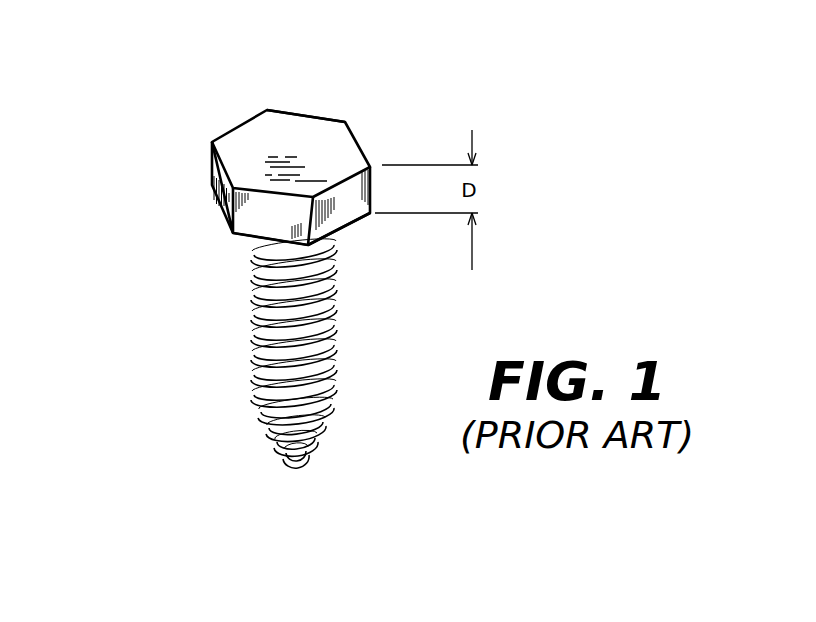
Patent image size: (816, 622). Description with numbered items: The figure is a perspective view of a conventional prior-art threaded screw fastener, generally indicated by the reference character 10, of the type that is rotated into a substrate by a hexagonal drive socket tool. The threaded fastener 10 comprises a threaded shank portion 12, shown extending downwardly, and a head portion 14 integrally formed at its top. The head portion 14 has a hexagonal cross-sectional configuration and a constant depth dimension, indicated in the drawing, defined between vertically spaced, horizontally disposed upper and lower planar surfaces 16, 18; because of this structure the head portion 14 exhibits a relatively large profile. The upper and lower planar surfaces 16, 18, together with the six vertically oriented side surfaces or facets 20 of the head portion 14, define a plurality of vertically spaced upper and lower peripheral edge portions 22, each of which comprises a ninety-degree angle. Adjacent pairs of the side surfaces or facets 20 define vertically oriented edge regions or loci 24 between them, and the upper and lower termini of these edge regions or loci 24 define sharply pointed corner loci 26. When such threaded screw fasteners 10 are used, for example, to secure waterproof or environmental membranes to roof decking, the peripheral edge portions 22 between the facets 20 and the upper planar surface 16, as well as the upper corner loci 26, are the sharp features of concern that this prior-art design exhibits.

The threaded fastener 10 is at (452, 65).
The threaded shank portion 12 is at (250, 343).
The head portion 14 is at (253, 190).
The upper planar surface 16 is at (267, 147).
The lower planar surface 18 is at (348, 230).
The side surfaces or facets 20 is at (247, 241).
The upper and lower peripheral edge portions 22 is at (318, 117).
The vertically oriented edge regions or loci 24 is at (233, 234).
The sharply pointed corner loci 26 is at (265, 110).